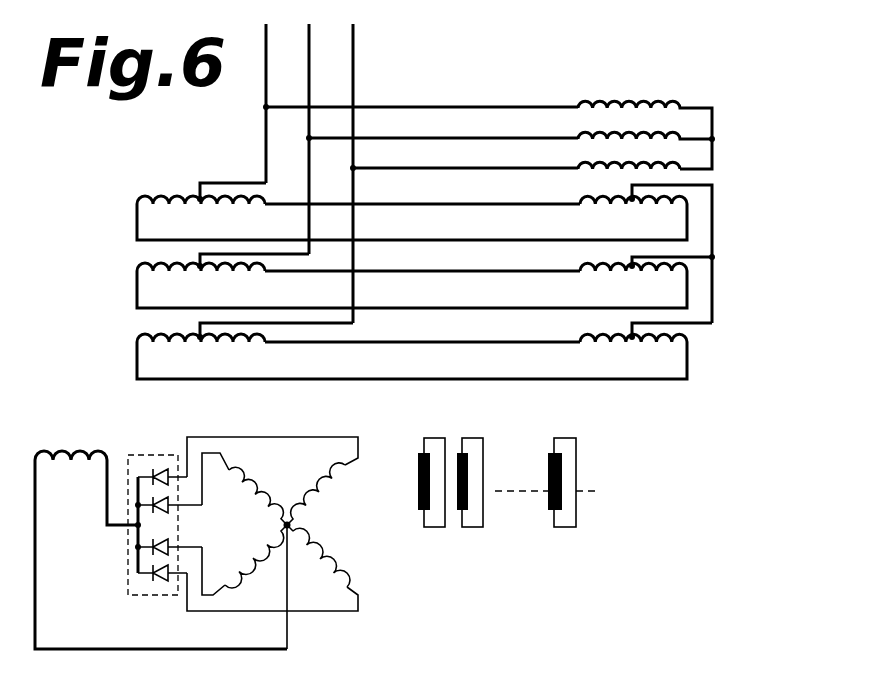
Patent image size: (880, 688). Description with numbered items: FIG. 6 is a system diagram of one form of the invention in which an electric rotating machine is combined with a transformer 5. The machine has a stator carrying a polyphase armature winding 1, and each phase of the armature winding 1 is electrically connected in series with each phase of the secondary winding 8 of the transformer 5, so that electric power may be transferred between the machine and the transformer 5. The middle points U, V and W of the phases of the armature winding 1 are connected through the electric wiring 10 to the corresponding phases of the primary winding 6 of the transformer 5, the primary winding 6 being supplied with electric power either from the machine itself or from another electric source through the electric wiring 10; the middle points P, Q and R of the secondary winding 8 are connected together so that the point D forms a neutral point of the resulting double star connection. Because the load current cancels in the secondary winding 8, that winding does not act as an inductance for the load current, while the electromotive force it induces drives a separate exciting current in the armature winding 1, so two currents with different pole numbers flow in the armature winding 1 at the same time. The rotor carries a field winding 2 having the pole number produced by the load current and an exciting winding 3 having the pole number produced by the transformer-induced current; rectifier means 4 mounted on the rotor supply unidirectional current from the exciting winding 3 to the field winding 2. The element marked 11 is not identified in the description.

The armature winding 1 is at (200, 338).
The field winding 2 is at (93, 446).
The exciting winding 3 is at (317, 542).
The rectifier means 4 is at (145, 597).
The transformer 5 is at (447, 301).
The primary winding 6 is at (637, 102).
The secondary winding 8 is at (687, 204).
The electric wiring 10 is at (353, 73).
The commutator / brush assembly 11 is at (547, 503).